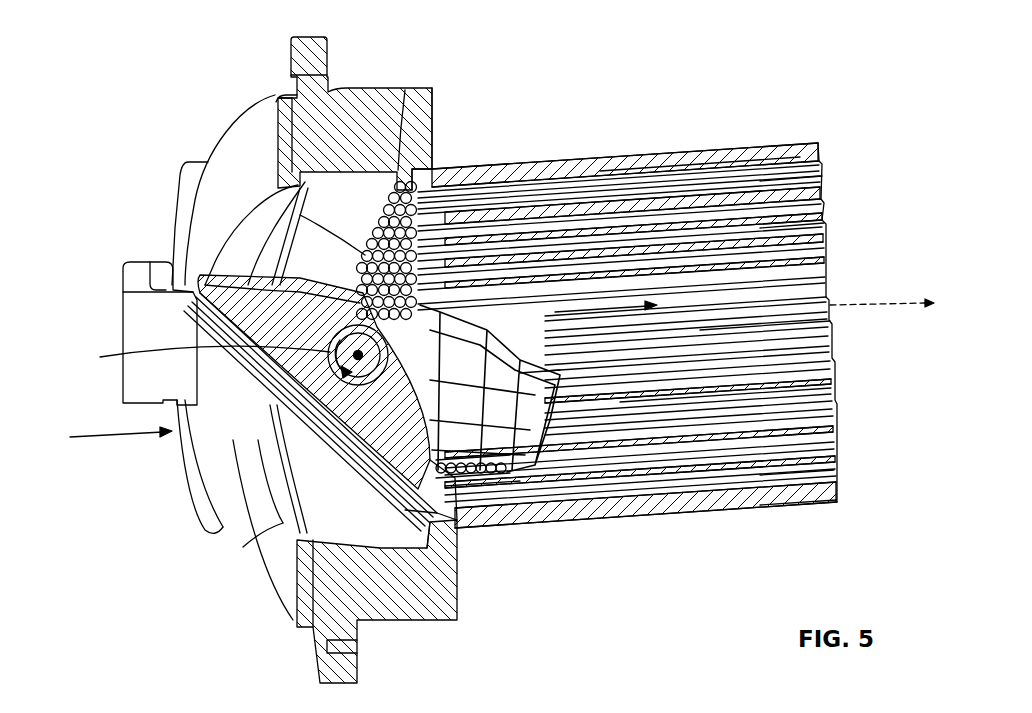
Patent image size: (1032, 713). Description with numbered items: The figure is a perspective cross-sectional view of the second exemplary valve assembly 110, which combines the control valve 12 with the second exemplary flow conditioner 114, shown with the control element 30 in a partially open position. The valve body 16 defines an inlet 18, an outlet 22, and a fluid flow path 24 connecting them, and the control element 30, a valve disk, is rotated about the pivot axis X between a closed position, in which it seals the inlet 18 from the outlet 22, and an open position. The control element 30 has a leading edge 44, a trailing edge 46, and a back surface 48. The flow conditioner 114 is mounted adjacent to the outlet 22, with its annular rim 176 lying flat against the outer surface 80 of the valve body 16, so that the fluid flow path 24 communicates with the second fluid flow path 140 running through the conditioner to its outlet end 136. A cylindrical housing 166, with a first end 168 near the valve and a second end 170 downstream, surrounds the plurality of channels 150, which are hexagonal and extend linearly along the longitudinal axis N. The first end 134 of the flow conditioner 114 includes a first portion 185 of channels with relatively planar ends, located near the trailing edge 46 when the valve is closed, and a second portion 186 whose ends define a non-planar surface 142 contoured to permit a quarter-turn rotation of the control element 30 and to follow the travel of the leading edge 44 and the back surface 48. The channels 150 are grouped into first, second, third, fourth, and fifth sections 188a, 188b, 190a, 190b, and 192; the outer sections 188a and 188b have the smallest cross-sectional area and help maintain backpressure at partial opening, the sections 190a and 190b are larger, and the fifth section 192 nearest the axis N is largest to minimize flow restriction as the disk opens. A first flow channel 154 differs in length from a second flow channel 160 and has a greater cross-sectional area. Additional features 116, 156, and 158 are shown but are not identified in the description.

The second exemplary valve assembly 110 is at (108, 58).
The control valve 12 is at (198, 136).
The first end of the flow conditioner 134 is at (285, 185).
The first portion of the plurality of channels 185 is at (282, 98).
The valve body 16 is at (358, 112).
The second section 188b is at (407, 190).
The outer surface of the valve body 80 is at (400, 160).
The annular rim 176 is at (425, 143).
The drive shaft bore 156 is at (495, 245).
The second fluid flow path 140 is at (603, 307).
The shaft outer layer 116 is at (690, 158).
The cylindrical housing 166 is at (758, 158).
The second exemplary flow conditioner 114 is at (800, 220).
The plurality of channels 150 is at (822, 170).
The second or outlet end of the flow conditioner 136 is at (823, 222).
The shaft axis 158 is at (830, 305).
The longitudinal axis of the flow conditioner N is at (877, 310).
The second end of the cylindrical housing 170 is at (838, 497).
The fifth section 192 is at (797, 477).
The first flow channel 154 is at (712, 320).
The second flow channel 160 is at (663, 397).
The first section 188a is at (557, 490).
The second portion of the plurality of channels 186 is at (540, 470).
The non-planar surface 142 is at (513, 440).
The third section 190a is at (470, 470).
The fourth section 190b is at (375, 232).
The leading edge 44 is at (460, 480).
The first end of the cylindrical housing 168 is at (437, 537).
The outlet 22 is at (400, 533).
The inlet 18 is at (283, 523).
The fluid flow path 24 is at (123, 440).
The pivot axis X is at (201, 358).
The trailing edge 46 is at (207, 283).
The control element 30 is at (298, 270).
The back surface 48 is at (365, 255).